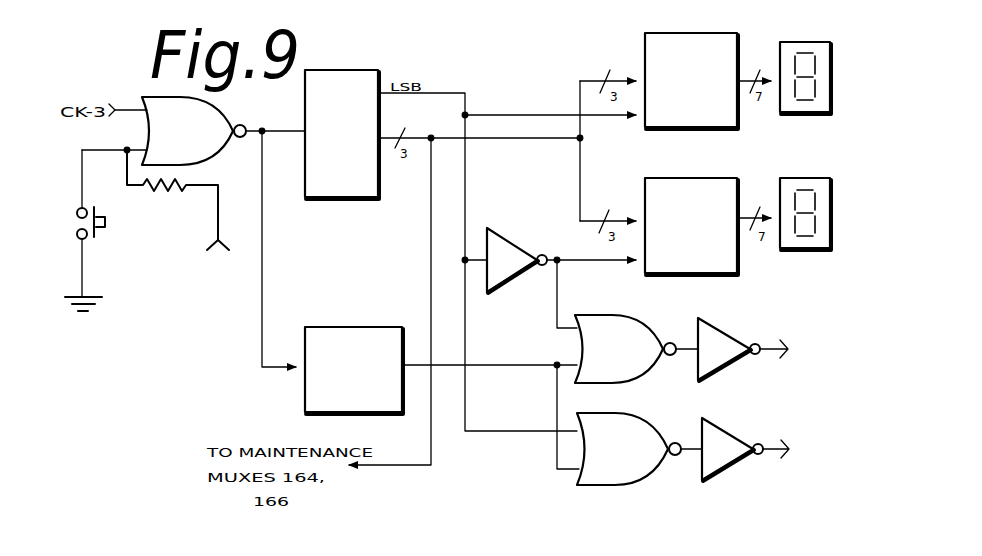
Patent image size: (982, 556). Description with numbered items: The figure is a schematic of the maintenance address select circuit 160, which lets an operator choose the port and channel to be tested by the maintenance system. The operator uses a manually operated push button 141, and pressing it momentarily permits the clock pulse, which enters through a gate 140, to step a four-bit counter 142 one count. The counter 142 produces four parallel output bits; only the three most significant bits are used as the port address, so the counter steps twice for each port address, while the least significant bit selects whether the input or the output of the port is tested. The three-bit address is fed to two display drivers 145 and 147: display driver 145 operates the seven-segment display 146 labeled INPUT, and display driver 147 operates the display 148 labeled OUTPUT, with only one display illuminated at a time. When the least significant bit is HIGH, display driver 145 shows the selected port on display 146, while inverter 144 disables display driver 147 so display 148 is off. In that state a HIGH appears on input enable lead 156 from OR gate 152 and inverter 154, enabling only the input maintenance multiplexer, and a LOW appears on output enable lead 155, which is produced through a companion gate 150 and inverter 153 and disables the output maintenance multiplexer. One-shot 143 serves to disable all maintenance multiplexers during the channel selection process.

The NOR gate 140 is at (204, 143).
The push button 141 is at (95, 245).
The 4-bit counter 142 is at (340, 190).
The one-shot 143 is at (335, 325).
The inverter 144 is at (512, 252).
The display driver 145 is at (702, 117).
The seven-segment display 146 is at (786, 113).
The display driver 147 is at (708, 265).
The display 148 is at (801, 250).
The NOR gate 150 is at (633, 361).
The OR gate 152 is at (637, 461).
The inverter 153 is at (735, 344).
The inverter 154 is at (735, 432).
The output enable lead 155 is at (768, 355).
The input enable lead 156 is at (773, 442).
The maintenance address select circuit 160 is at (196, 342).